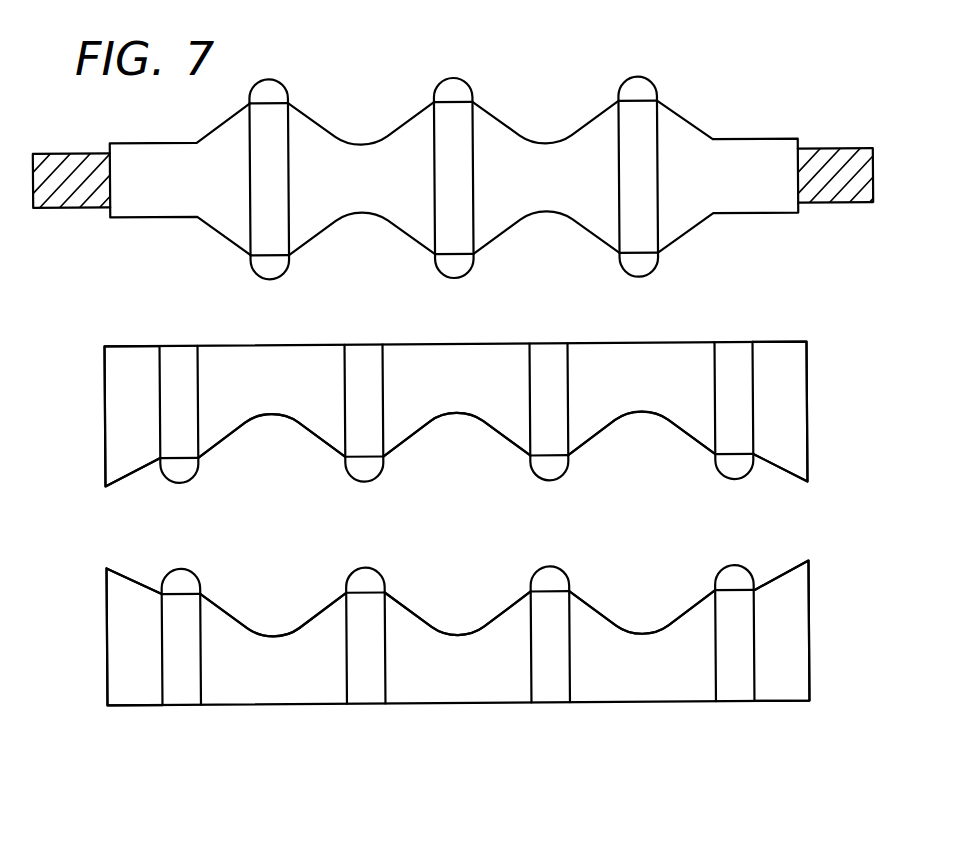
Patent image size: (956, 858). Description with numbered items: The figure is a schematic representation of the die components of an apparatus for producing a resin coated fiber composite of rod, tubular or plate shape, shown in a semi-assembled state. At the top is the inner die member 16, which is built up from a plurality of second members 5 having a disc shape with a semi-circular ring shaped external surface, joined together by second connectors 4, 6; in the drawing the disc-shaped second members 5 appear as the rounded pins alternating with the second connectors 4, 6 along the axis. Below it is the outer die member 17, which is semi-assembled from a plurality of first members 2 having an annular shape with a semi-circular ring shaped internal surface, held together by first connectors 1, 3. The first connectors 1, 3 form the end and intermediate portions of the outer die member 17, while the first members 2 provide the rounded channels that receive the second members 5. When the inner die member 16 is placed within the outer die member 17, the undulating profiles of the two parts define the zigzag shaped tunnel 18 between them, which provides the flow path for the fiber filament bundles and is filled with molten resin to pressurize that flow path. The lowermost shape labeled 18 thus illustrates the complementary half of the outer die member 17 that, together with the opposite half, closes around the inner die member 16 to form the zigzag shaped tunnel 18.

The first connector 1 is at (457, 524).
The first member 2 is at (457, 523).
The first connector 3 is at (456, 527).
The second connector 4 is at (465, 178).
The second member 5 is at (453, 178).
The second connector 6 is at (454, 178).
The inner die member 16 is at (465, 170).
The outer die member 17 is at (685, 353).
The zigzag shaped tunnel 18 is at (437, 541).